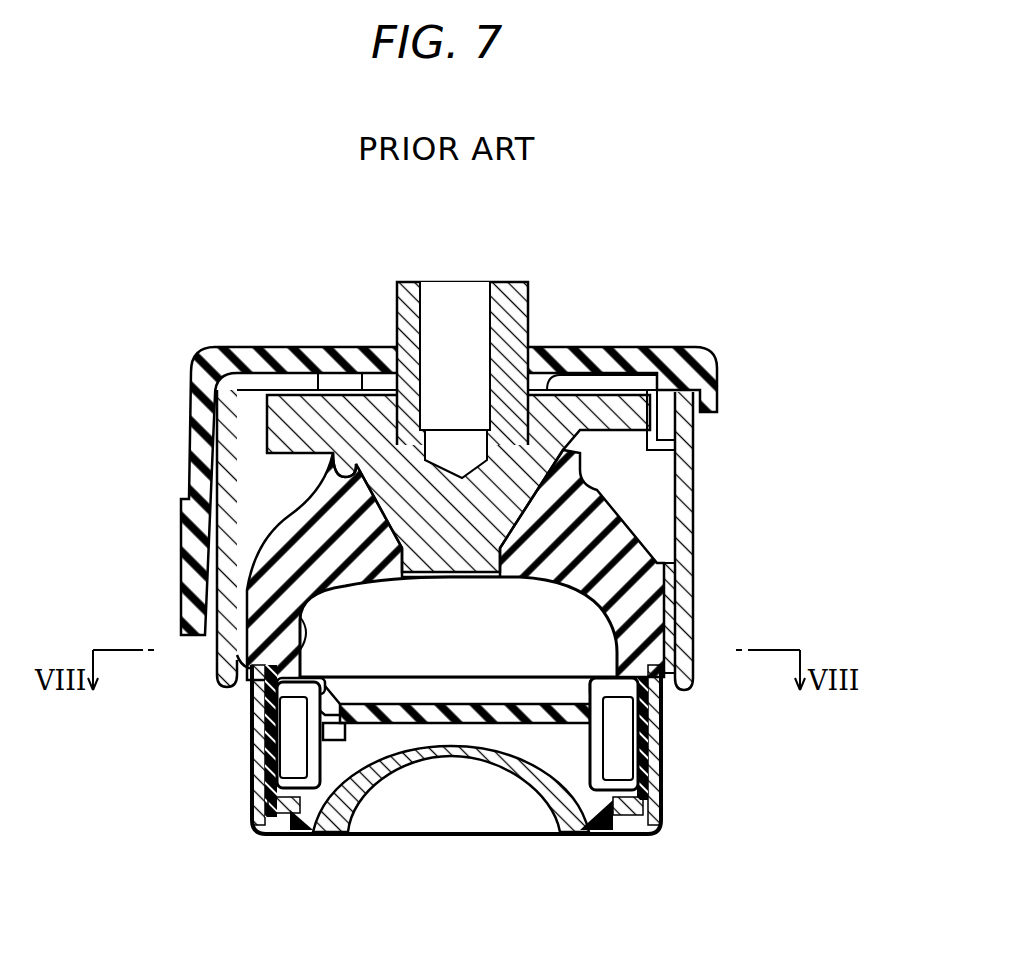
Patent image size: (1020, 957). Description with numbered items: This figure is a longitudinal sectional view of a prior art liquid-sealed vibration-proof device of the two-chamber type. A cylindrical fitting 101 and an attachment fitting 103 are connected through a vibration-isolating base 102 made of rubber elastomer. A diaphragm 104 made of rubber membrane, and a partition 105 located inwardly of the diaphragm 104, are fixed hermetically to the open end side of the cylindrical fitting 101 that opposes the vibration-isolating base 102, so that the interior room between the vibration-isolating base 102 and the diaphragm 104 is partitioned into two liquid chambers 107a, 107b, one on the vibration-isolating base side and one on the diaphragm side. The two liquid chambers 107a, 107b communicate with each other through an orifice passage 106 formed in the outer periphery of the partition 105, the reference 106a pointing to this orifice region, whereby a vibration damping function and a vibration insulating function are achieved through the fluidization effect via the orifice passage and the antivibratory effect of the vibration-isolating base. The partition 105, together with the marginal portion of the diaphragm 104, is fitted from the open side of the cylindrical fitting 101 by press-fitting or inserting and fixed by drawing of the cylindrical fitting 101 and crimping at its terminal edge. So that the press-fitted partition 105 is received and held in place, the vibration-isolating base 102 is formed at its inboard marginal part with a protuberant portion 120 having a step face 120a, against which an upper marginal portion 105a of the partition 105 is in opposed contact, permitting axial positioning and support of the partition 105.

The cylindrical fitting 101 is at (258, 743).
The vibration-isolating base 102 is at (305, 540).
The attachment fitting 103 is at (508, 327).
The diaphragm 104 is at (520, 765).
The partition 105 is at (366, 756).
The upper marginal portion 105a is at (283, 688).
The orifice passage 106 is at (292, 747).
The ring portion of bottom case 106a is at (640, 748).
The liquid chamber 107a is at (530, 627).
The liquid chamber 107b is at (560, 765).
The protuberant portion 120 is at (305, 625).
The step face 120a is at (607, 688).